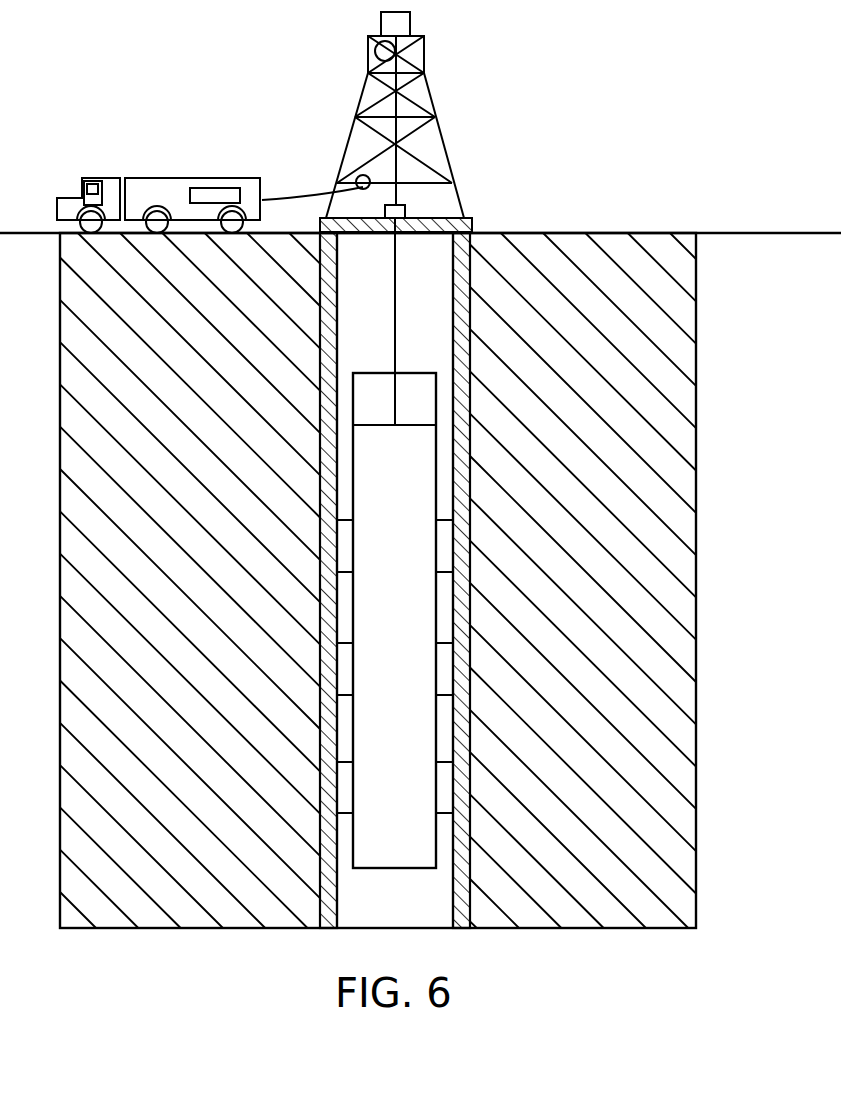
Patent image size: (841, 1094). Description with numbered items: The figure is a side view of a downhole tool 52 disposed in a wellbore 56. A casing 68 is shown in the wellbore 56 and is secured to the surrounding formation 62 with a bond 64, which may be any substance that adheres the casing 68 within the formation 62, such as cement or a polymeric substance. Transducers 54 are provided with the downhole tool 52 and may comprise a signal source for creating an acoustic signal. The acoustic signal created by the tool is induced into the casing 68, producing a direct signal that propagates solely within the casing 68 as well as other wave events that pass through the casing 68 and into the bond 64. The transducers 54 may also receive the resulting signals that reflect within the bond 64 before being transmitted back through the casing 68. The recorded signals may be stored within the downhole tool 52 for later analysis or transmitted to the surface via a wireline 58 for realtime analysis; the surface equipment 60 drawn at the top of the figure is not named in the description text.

The downhole tool 52 is at (378, 658).
The transducers 54 is at (348, 797).
The wellbore 56 is at (432, 263).
The wireline 58 is at (392, 335).
The logging truck 60 is at (158, 171).
The formation 62 is at (663, 368).
The bond 64 is at (473, 419).
The casing 68 is at (443, 487).